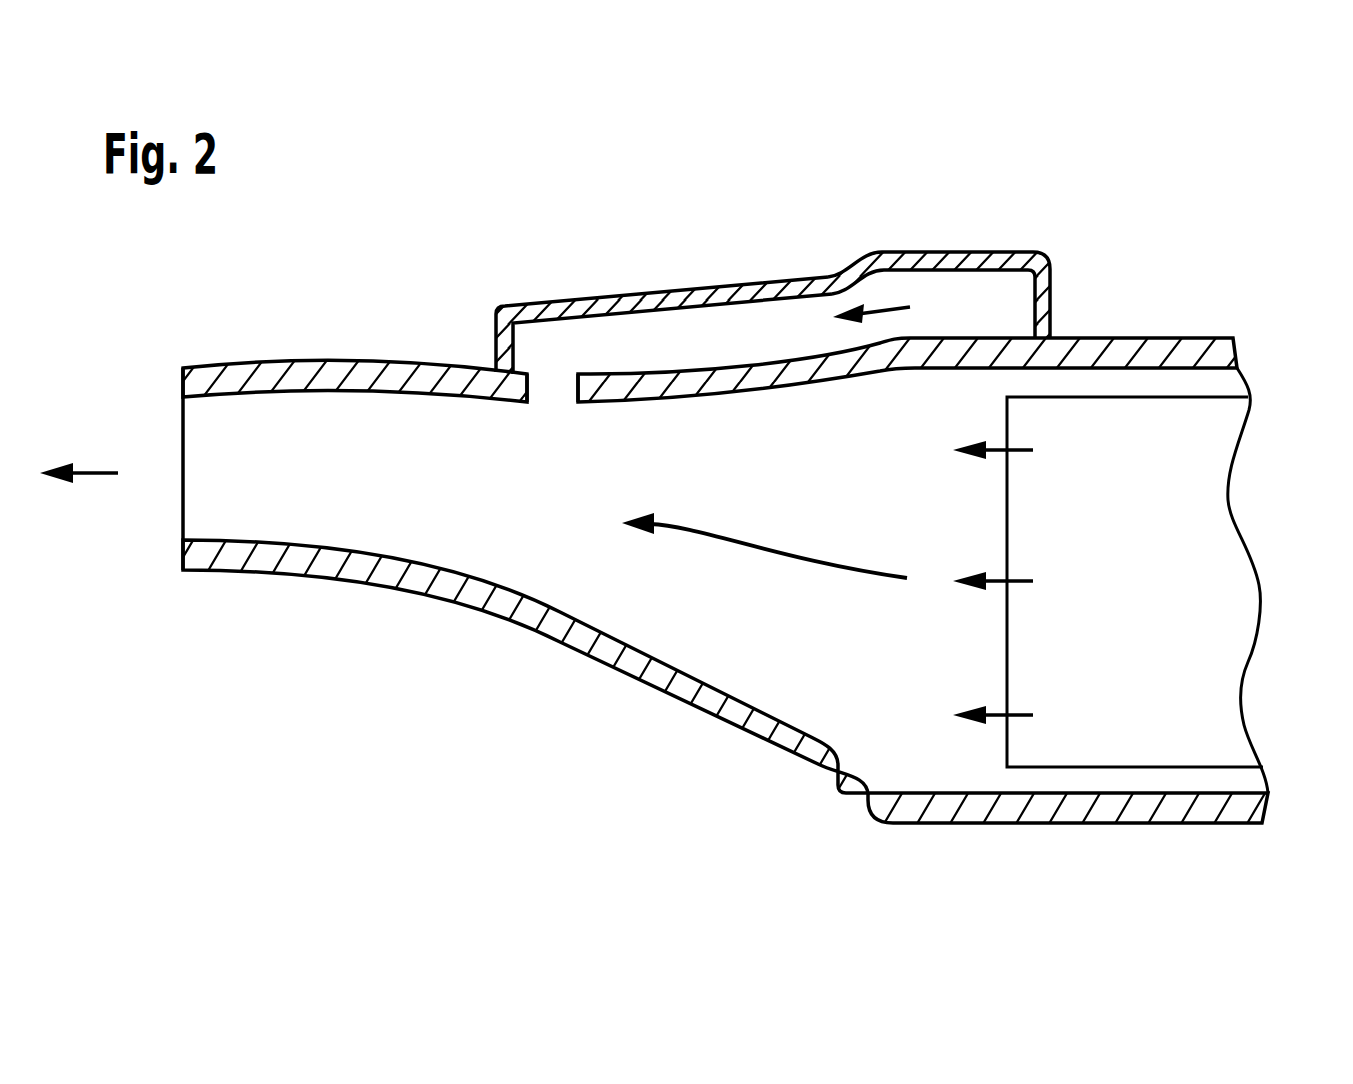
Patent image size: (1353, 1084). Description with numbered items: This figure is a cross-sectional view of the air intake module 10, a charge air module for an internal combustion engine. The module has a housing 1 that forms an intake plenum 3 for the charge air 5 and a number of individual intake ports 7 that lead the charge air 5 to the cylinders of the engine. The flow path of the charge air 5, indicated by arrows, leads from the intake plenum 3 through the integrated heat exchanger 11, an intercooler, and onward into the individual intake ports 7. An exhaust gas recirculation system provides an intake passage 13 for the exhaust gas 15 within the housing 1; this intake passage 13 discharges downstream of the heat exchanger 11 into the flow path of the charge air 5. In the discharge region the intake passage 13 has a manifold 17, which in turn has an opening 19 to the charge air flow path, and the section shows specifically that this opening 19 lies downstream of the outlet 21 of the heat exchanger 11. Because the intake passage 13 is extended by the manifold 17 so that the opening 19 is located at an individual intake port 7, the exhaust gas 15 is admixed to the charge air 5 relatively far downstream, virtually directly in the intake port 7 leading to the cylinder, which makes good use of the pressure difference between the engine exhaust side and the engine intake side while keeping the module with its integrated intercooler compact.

The housing 1 is at (846, 245).
The intake plenum 3 is at (1116, 812).
The charge air 5 is at (827, 562).
The individual intake port 7 is at (290, 562).
The air intake module 10 is at (1258, 213).
The heat exchanger 11 is at (1220, 583).
The intake passage 13 is at (965, 262).
The exhaust gas 15 is at (897, 335).
The manifold 17 is at (672, 298).
The opening 19 is at (548, 393).
The outlet 21 is at (1008, 497).